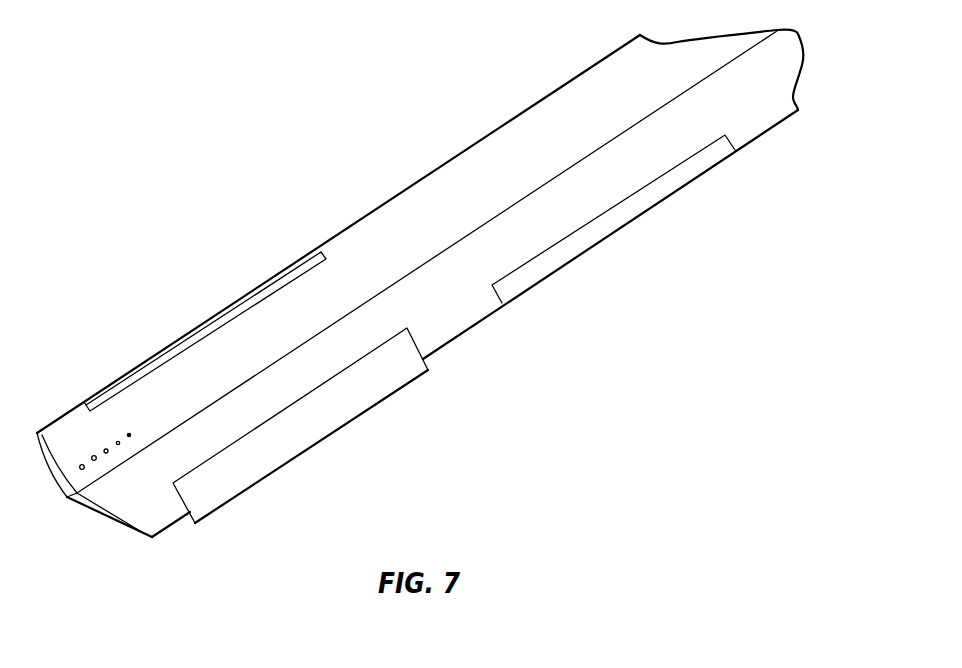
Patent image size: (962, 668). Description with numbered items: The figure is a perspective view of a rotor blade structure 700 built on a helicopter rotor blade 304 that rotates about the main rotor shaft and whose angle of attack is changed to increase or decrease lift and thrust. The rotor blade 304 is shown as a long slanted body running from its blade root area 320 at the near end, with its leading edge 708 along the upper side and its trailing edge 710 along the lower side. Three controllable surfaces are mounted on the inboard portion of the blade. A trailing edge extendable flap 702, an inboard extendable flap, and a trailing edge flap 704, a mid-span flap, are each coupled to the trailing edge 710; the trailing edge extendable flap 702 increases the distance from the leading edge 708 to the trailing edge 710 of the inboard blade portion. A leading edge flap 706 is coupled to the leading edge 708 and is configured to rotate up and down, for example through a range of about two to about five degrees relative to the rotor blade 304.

The rotor blade structure 700 is at (273, 124).
The rotor blade 304 is at (548, 122).
The leading edge 708 is at (442, 165).
The trailing edge 710 is at (758, 127).
The trailing edge extendable flap 702 is at (330, 410).
The trailing edge flap 704 is at (617, 222).
The leading edge flap 706 is at (198, 327).
The blade root area 320 is at (46, 478).